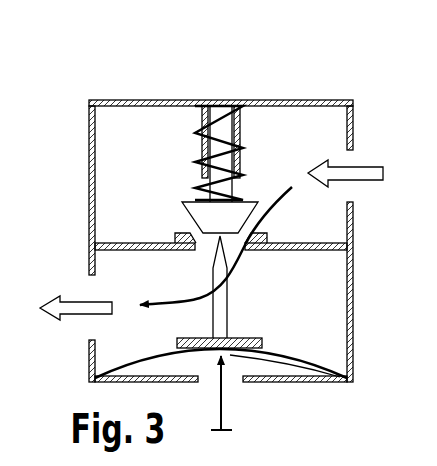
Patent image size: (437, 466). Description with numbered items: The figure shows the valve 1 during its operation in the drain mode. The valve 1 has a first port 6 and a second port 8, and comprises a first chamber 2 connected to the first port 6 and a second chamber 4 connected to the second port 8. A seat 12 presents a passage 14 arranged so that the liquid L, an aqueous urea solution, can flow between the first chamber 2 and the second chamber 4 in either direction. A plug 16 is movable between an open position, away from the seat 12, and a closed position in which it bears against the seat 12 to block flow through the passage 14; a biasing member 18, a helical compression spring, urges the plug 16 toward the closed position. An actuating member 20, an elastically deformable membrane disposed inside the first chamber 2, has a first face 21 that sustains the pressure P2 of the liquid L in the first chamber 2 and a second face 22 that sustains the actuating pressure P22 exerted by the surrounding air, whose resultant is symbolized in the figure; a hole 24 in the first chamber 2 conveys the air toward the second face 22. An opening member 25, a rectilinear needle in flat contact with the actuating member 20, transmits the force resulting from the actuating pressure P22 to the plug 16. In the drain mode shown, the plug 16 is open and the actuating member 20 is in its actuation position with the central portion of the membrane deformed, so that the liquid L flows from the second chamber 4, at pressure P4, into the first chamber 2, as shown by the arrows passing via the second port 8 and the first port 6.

The valve 1 is at (340, 91).
The first chamber 2 is at (119, 347).
The second chamber 4 is at (107, 170).
The first port 6 is at (91, 294).
The second port 8 is at (355, 161).
The seat 12 is at (174, 236).
The passage 14 is at (203, 256).
The plug 16 is at (185, 213).
The biasing member 18 is at (199, 137).
The actuating member 20 is at (307, 352).
The first face 21 is at (287, 343).
The second face 22 is at (143, 364).
The hole 24 is at (238, 386).
The opening member 25 is at (195, 350).
The pressure of the liquid in the first chamber P2 is at (327, 272).
The pressure of the liquid in the second chamber P4 is at (326, 121).
The actuating pressure P22 is at (222, 407).
The liquid L is at (381, 182).